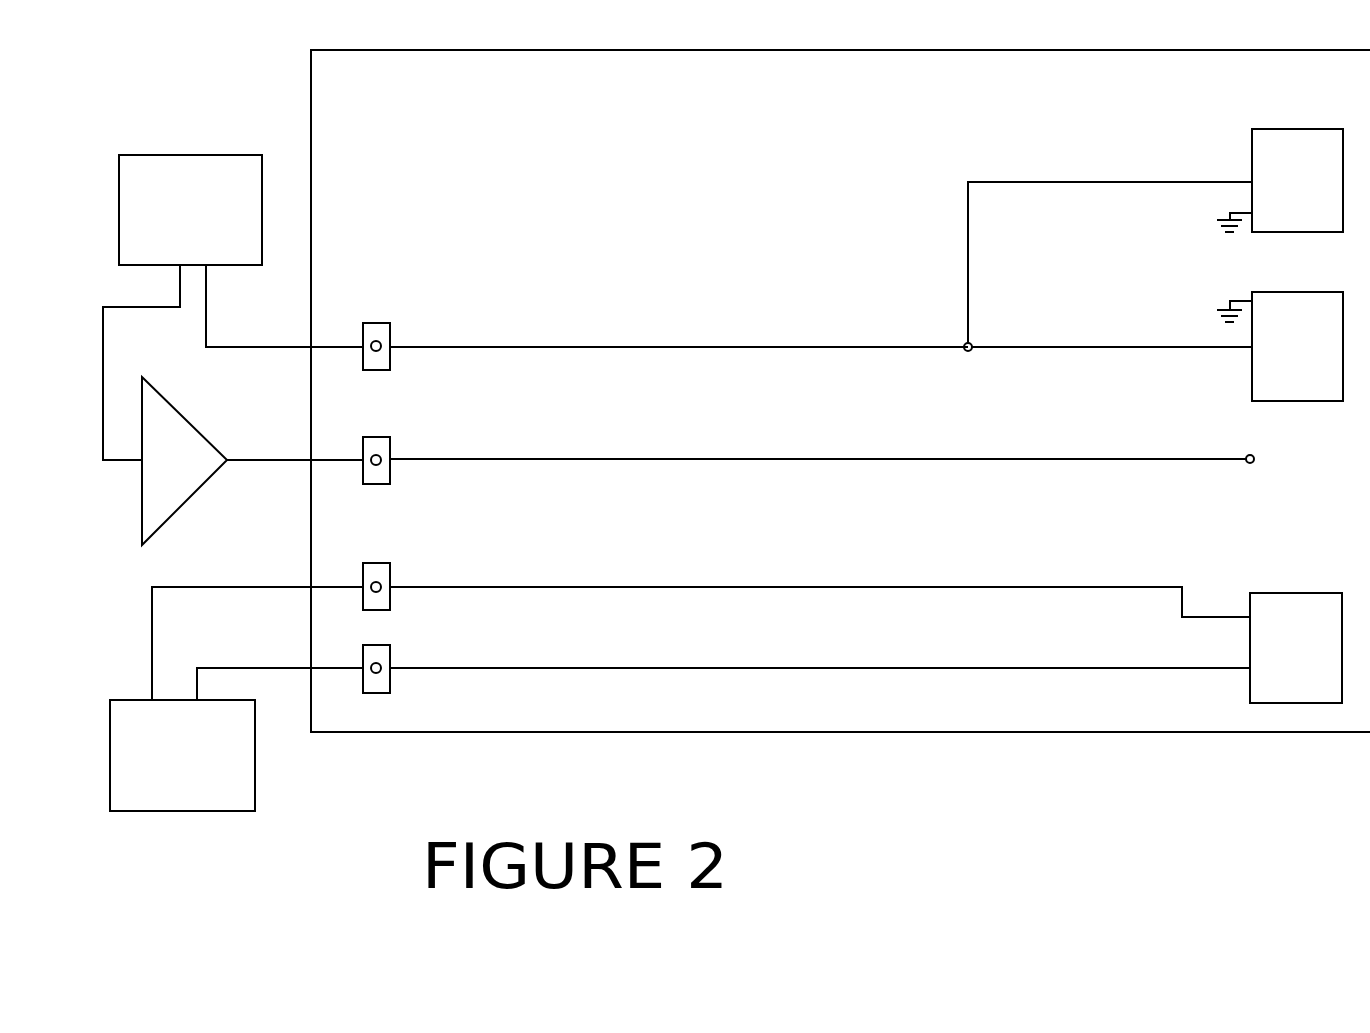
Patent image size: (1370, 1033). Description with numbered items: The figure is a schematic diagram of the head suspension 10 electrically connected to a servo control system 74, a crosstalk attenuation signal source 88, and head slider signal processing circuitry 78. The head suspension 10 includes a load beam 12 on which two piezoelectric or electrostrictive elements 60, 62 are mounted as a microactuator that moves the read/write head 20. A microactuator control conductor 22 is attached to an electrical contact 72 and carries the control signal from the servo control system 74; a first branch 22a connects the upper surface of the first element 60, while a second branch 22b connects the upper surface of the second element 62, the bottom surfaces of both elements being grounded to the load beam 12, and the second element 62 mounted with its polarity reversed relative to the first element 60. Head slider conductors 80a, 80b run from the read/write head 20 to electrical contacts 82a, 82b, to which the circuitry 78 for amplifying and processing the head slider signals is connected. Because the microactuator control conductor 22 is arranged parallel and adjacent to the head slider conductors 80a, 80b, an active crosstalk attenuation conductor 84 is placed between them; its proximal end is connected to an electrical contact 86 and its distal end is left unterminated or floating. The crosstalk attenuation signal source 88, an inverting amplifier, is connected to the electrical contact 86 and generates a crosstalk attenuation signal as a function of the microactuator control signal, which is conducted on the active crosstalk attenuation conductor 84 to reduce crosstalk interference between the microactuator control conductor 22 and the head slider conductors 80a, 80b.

The head suspension 10 is at (877, 773).
The load beam 12 is at (1052, 732).
The read/write head 20 is at (1287, 593).
The microactuator control conductor 22 is at (821, 241).
The branch of microactuator control conductor 22a is at (1008, 347).
The branch of microactuator control conductor 22b is at (1013, 182).
The first piezoelectric or electrostrictive element 60 is at (1277, 292).
The second piezoelectric or electrostrictive element 62 is at (1270, 130).
The electrical contact 72 is at (390, 325).
The servo control system 74 is at (262, 208).
The circuitry 78 is at (255, 753).
The head slider conductor 80a is at (663, 587).
The head slider conductor 80b is at (673, 668).
The electrical contact 82a is at (390, 570).
The electrical contact 82b is at (390, 657).
The active crosstalk attenuation conductor 84 is at (650, 459).
The electrical contact 86 is at (390, 442).
The crosstalk attenuation signal source 88 is at (187, 417).